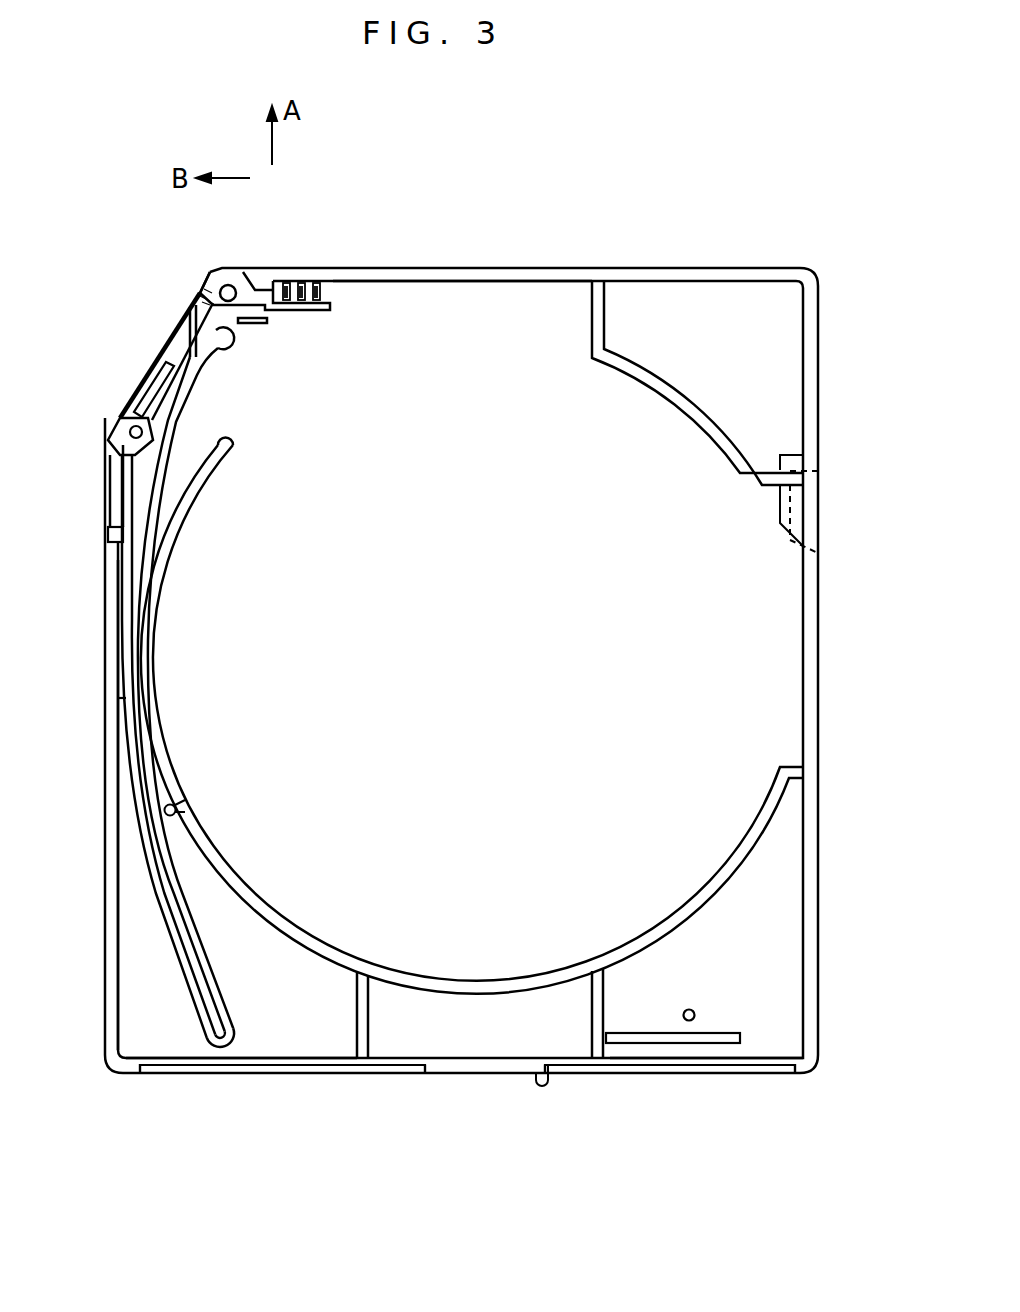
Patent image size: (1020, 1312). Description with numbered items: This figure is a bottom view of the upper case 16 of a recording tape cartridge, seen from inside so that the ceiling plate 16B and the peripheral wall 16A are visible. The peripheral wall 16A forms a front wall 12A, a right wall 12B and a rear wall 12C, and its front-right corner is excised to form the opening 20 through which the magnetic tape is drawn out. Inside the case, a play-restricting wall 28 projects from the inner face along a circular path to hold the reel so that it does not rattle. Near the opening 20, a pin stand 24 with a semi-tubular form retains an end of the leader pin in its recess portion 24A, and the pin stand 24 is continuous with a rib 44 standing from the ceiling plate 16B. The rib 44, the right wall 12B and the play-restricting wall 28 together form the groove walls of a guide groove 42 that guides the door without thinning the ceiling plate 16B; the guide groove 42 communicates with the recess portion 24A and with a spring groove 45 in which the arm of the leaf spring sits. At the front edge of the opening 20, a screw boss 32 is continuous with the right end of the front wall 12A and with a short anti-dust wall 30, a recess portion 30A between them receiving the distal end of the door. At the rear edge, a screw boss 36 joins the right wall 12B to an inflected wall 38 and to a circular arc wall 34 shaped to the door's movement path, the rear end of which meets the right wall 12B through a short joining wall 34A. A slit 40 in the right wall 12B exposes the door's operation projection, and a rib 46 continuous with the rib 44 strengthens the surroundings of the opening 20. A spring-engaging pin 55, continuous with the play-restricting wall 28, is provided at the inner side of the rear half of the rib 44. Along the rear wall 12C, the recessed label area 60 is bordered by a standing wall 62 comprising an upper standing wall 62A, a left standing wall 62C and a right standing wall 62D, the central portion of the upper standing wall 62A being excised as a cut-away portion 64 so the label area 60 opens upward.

The upper case 16 is at (564, 220).
The peripheral wall 16A is at (423, 677).
The ceiling plate 16B is at (327, 923).
The front wall 12A is at (462, 241).
The right wall 12B is at (81, 805).
The rear wall 12C is at (706, 1105).
The opening 20 is at (128, 410).
The pin stand 24 is at (237, 345).
The recess portion 24A is at (226, 352).
The play-restricting wall 28 is at (207, 468).
The anti-dust wall 30 is at (200, 293).
The recess portion 30A is at (198, 300).
The screw boss 32 is at (240, 285).
The circular arc wall 34 is at (108, 485).
The joining wall 34A is at (110, 540).
The screw boss 36 is at (121, 423).
The inflected wall 38 is at (108, 440).
The slit 40 is at (116, 697).
The guide groove 42 is at (290, 268).
The rib 44 is at (192, 312).
The spring groove 45 is at (256, 322).
The rib 46 is at (152, 380).
The spring-engaging pin 55 is at (172, 805).
The label area 60 is at (548, 1064).
The standing wall 62 is at (476, 1109).
The upper standing wall 62A is at (388, 1068).
The left standing wall 62C is at (793, 1070).
The right standing wall 62D is at (140, 1068).
The cut-away portion 64 is at (425, 1072).